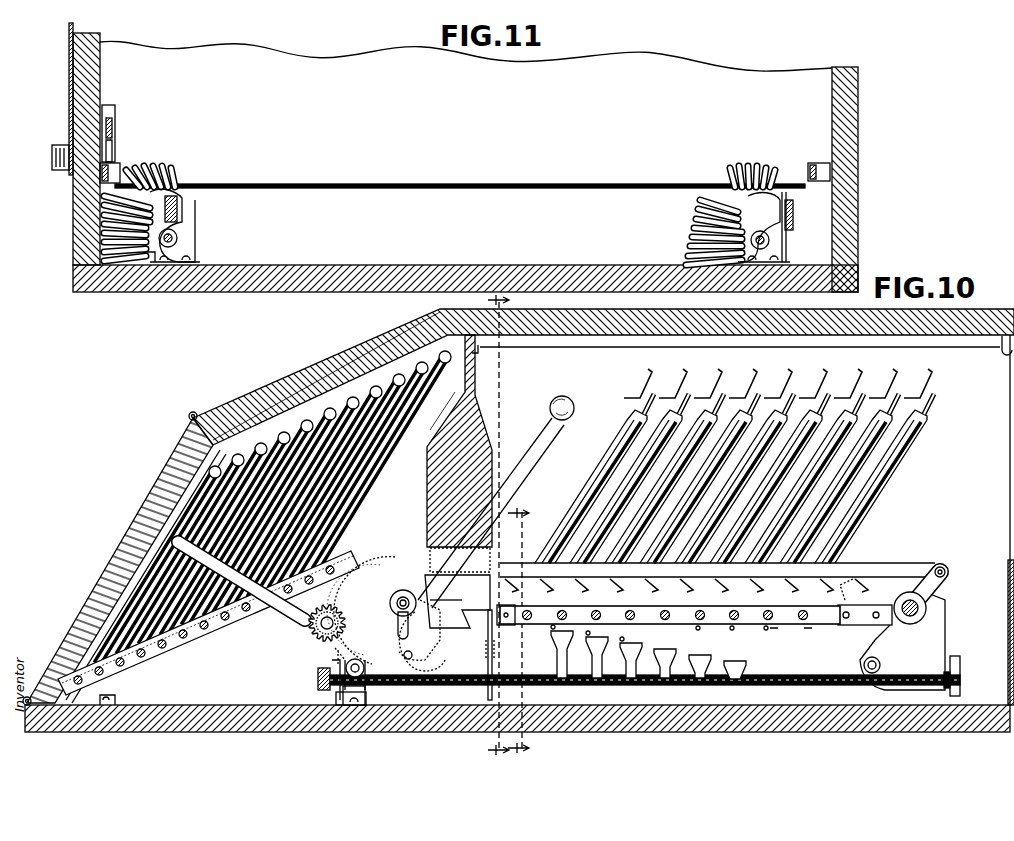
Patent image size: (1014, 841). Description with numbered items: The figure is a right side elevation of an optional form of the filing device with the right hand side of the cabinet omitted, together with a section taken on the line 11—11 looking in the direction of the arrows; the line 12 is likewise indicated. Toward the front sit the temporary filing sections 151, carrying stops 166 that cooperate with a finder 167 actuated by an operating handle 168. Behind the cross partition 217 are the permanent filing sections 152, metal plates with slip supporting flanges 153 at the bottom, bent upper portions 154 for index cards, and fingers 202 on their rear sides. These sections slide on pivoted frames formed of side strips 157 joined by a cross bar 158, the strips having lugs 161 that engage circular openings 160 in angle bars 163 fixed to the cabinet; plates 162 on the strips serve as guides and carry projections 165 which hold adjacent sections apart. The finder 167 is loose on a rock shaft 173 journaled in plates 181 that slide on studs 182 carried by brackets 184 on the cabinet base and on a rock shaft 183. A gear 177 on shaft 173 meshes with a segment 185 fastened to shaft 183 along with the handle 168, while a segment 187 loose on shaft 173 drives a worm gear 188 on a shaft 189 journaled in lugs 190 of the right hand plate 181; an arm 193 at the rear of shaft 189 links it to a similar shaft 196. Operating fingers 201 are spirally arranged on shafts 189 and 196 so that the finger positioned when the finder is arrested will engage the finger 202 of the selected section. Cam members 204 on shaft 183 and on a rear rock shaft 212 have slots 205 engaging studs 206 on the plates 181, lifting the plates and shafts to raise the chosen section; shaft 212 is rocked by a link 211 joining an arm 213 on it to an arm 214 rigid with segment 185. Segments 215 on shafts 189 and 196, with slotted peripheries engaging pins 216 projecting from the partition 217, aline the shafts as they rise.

In FIG. 11, the operating handle 168 is at (68, 98).
In FIG. 10, the operating handle 168 is at (536, 455).
In FIG. 11, the pins 216 is at (172, 167).
In FIG. 10, the pins 216 is at (470, 626).
In FIG. 11, the segments 215 is at (118, 218).
In FIG. 10, the segments 215 is at (490, 642).
In FIG. 11, the shaft 189 is at (178, 240).
In FIG. 10, the shaft 189 is at (460, 686).
In FIG. 11, the cross partition 217 is at (478, 189).
In FIG. 10, the cross partition 217 is at (480, 410).
In FIG. 11, the shaft 196 is at (770, 238).
In FIG. 10, the temporary filing sections 151 is at (355, 372).
In FIG. 10, the bent upper portions of plates 154 is at (645, 376).
In FIG. 10, the lugs or projections 165 is at (940, 425).
In FIG. 10, the plates 162 is at (918, 480).
In FIG. 10, the stops 166 is at (210, 512).
In FIG. 10, the finder 167 is at (270, 612).
In FIG. 10, the rock shaft 173 is at (318, 625).
In FIG. 10, the gear 177 is at (322, 636).
In FIG. 10, the segment 185 is at (372, 556).
In FIG. 10, the segment 187 is at (330, 655).
In FIG. 10, the plates 181 is at (416, 612).
In FIG. 10, the rock shaft 183 is at (410, 610).
In FIG. 10, the cam members 204 is at (420, 640).
In FIG. 10, the slots 205 is at (410, 612).
In FIG. 10, the studs 206 is at (416, 657).
In FIG. 10, the arm 214 is at (436, 590).
In FIG. 10, the worm gear 188 is at (324, 688).
In FIG. 10, the lugs 190 is at (372, 684).
In FIG. 10, the studs 182 is at (392, 686).
In FIG. 10, the brackets 184 is at (380, 705).
In FIG. 10, the slip supporting flanges 153 is at (870, 577).
In FIG. 10, the link 211 is at (928, 568).
In FIG. 10, the arm 213 is at (946, 574).
In FIG. 10, the rock shaft 212 is at (926, 608).
In FIG. 10, the angle bars 163 is at (840, 620).
In FIG. 10, the arm 193 is at (960, 676).
In FIG. 10, the cross bar 158 is at (640, 600).
In FIG. 10, the strips 157 is at (652, 623).
In FIG. 10, the operating fingers 201 is at (562, 650).
In FIG. 10, the fingers 202 is at (552, 632).
In FIG. 10, the circular openings 160 is at (730, 628).
In FIG. 10, the lugs 161 is at (764, 627).
In FIG. 10, the permanent filing sections 152 is at (820, 622).
In FIG. 10, the section line 12- 12 is at (487, 534).
In FIG. 10, the section line 11 is at (529, 631).